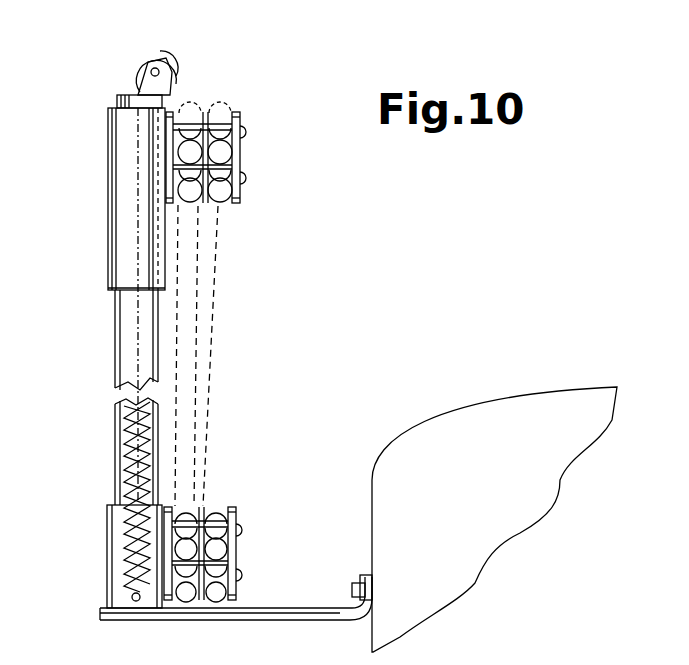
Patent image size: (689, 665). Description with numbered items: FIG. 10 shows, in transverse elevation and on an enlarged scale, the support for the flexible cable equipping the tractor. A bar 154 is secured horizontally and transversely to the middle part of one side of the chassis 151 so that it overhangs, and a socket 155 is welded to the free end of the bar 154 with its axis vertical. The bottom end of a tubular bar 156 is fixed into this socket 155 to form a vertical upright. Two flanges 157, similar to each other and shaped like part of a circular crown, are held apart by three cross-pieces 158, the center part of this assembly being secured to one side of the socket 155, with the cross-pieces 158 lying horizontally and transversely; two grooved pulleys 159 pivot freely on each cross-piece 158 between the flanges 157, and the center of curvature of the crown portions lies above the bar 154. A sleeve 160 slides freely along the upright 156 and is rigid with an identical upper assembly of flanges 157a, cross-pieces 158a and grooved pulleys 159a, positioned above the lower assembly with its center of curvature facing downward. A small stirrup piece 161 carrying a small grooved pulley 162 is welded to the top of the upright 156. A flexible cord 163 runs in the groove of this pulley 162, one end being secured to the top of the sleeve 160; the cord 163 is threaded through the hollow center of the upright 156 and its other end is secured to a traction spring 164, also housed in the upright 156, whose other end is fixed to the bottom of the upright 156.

The chassis 151 is at (402, 420).
The bar 154 is at (174, 620).
The socket 155 is at (107, 580).
The tubular bar 156 is at (157, 350).
The flanges 157 is at (236, 600).
The cross-pieces 158 is at (242, 575).
The grooved pulleys 159 is at (218, 510).
The flanges 157a is at (168, 207).
The cross-pieces 158a is at (246, 178).
The grooved pulleys 159a is at (222, 106).
The sleeve 160 is at (108, 192).
The stirrup piece 161 is at (132, 88).
The grooved pulley 162 is at (149, 56).
The flexible cord 163 is at (140, 326).
The traction spring 164 is at (120, 466).